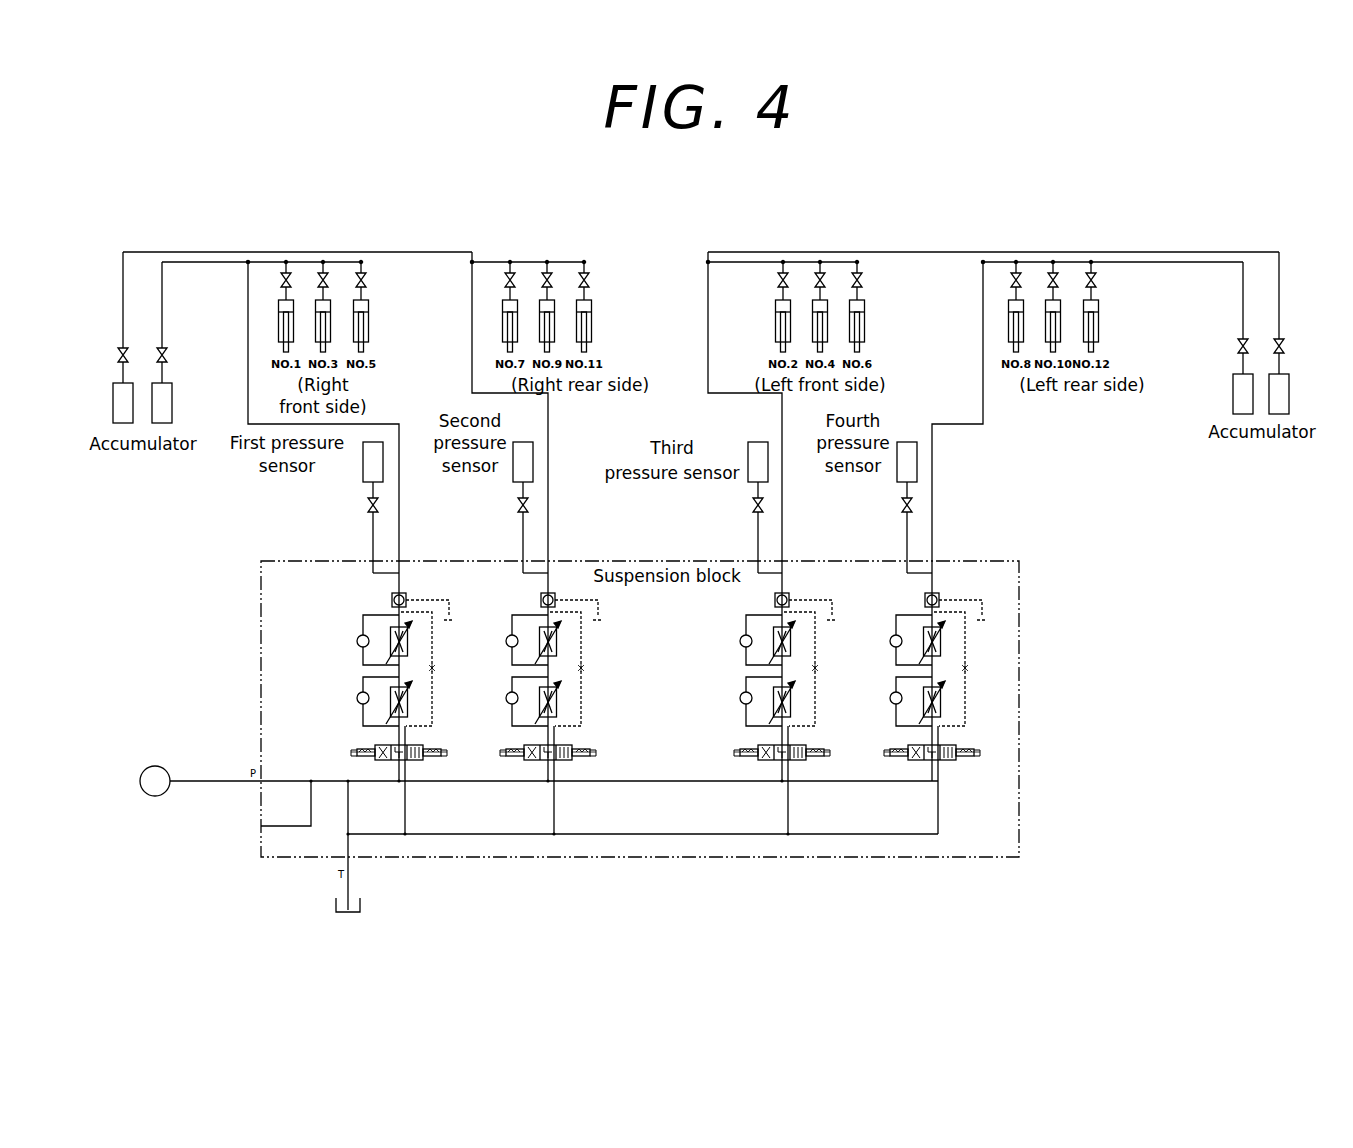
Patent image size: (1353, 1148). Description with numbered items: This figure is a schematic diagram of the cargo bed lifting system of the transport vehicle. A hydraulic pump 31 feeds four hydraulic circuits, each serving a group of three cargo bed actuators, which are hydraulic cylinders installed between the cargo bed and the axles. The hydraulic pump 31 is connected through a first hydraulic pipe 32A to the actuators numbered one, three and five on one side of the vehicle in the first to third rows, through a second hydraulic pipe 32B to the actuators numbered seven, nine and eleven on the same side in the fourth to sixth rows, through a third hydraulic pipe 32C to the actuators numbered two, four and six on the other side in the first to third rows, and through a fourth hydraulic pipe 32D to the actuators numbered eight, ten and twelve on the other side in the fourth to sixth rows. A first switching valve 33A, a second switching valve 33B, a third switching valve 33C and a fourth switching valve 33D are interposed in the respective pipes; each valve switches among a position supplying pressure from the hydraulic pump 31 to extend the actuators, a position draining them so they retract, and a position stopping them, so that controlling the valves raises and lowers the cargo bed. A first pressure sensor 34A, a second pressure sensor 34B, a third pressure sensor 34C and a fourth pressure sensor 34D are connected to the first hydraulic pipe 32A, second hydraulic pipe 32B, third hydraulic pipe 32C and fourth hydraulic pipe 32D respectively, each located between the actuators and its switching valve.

The hydraulic pump 31 is at (150, 765).
The first hydraulic pipe 32A is at (386, 422).
The second hydraulic pipe 32B is at (470, 318).
The third hydraulic pipe 32C is at (707, 383).
The fourth hydraulic pipe 32D is at (981, 420).
The first switching valve 33A is at (375, 747).
The second switching valve 33B is at (524, 747).
The third switching valve 33C is at (758, 747).
The fourth switching valve 33D is at (908, 747).
The first pressure sensor 34A is at (362, 480).
The second pressure sensor 34B is at (512, 480).
The third pressure sensor 34C is at (747, 480).
The fourth pressure sensor 34D is at (896, 480).